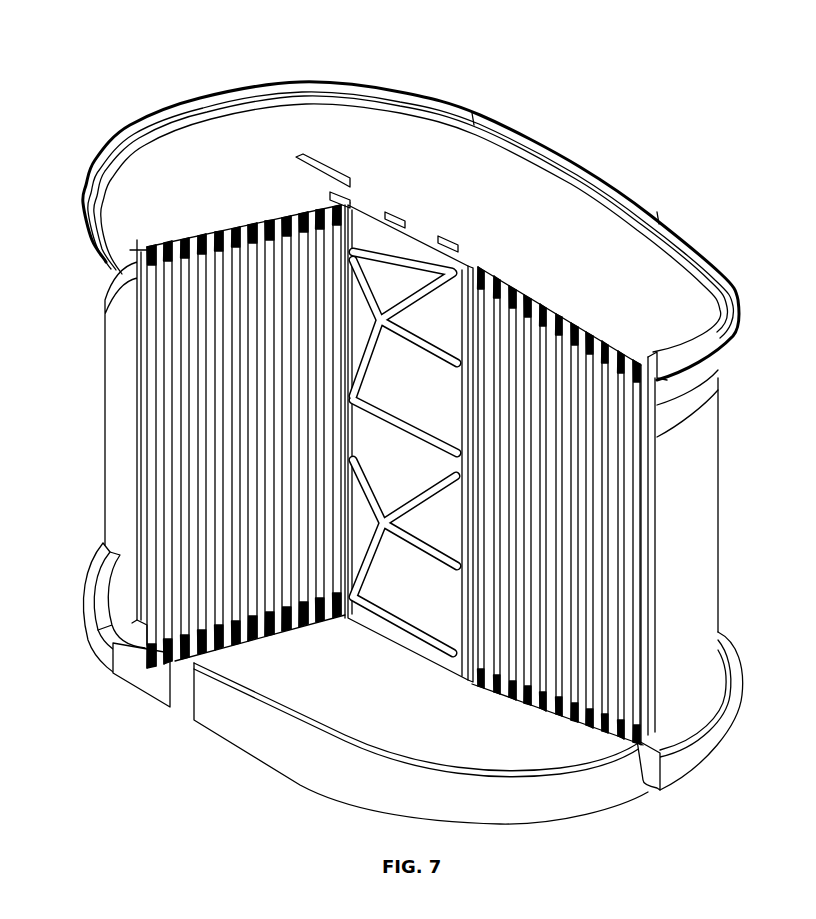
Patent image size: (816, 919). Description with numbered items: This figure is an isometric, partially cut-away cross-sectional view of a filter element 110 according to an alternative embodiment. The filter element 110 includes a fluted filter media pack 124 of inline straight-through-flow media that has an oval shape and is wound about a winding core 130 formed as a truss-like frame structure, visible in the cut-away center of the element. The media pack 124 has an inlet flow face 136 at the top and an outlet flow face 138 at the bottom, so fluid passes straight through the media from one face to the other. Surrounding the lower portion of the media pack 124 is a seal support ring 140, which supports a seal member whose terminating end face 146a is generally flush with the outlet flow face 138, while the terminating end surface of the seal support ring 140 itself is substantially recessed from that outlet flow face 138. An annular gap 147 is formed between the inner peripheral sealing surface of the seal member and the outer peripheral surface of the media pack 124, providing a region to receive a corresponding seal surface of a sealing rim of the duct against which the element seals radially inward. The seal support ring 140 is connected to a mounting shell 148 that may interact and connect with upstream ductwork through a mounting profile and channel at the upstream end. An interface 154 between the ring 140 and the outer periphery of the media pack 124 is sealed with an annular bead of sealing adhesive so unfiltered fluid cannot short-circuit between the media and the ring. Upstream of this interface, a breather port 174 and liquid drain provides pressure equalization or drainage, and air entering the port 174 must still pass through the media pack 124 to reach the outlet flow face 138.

The filter element 110 is at (690, 48).
The fluted filter media pack 124 is at (565, 212).
The inlet flow face 136 is at (195, 145).
The mounting shell 148 is at (118, 380).
The seal support ring 140 is at (98, 572).
The breather port 174 is at (95, 606).
The terminating end face 146a is at (130, 685).
The interface 154 is at (153, 667).
The outlet flow face 138 is at (297, 627).
The winding core 130 is at (386, 585).
The annular gap 147 is at (598, 735).